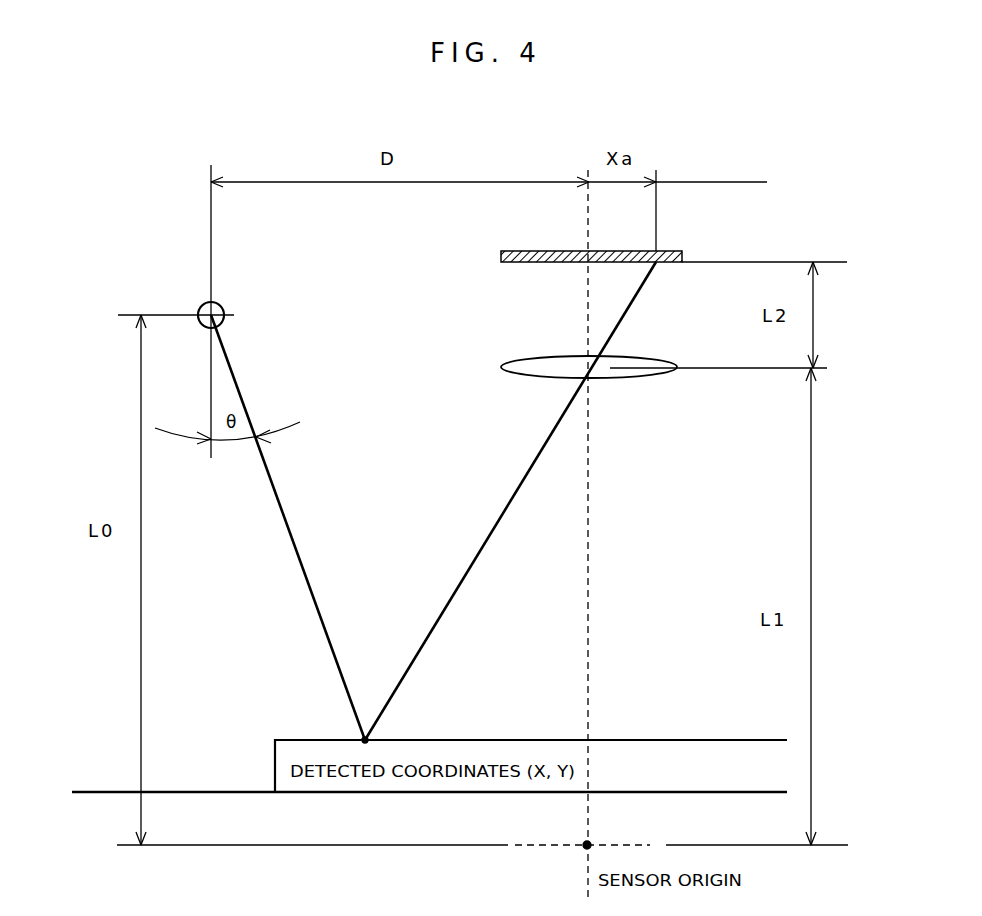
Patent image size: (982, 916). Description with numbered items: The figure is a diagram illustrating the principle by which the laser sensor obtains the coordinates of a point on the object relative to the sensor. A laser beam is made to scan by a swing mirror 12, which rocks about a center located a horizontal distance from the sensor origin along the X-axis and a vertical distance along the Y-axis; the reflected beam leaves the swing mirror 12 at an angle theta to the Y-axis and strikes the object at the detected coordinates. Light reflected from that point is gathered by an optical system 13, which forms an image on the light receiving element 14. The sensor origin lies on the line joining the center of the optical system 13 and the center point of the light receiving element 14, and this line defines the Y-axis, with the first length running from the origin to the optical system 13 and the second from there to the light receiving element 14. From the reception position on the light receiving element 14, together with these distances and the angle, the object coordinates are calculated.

The swing mirror 12 is at (199, 310).
The optical system 13 is at (625, 372).
The light receiving element 14 is at (673, 251).